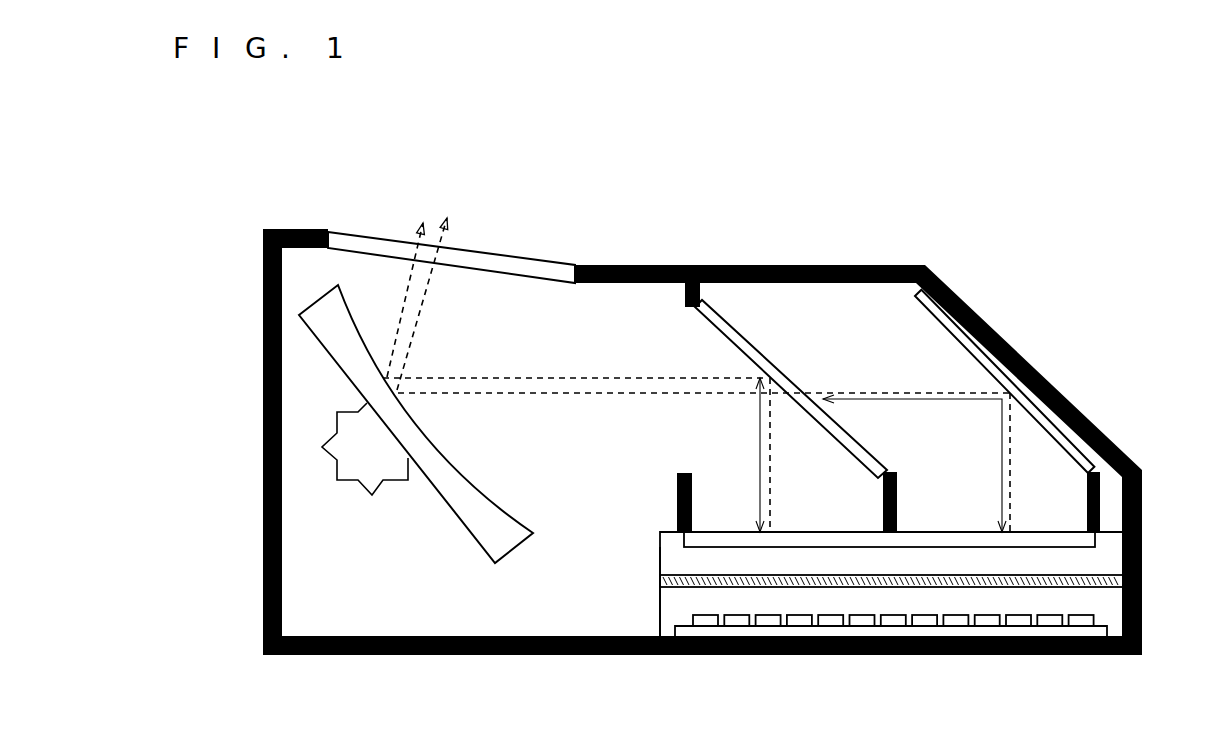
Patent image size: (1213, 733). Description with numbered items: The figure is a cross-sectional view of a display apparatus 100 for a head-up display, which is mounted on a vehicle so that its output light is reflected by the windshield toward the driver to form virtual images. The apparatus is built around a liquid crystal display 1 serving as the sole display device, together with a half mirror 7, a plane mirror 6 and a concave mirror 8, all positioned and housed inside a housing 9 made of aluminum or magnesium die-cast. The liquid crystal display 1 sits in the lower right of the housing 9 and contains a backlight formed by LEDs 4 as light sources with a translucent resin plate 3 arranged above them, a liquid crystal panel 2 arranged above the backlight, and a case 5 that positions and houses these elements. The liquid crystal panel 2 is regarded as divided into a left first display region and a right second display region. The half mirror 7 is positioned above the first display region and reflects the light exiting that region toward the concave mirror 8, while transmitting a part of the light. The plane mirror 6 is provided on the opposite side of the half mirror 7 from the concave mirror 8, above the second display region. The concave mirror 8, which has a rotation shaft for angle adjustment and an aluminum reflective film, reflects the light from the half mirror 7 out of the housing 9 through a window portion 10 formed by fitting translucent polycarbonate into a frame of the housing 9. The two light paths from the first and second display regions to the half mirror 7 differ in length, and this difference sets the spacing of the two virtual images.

The display apparatus 100 is at (231, 133).
The liquid crystal display 1 is at (670, 548).
The liquid crystal panel 2 is at (1095, 542).
The translucent resin plate 3 is at (1120, 581).
The LEDs 4 is at (1097, 617).
The case 5 is at (660, 604).
The plane mirror 6 is at (1007, 338).
The half mirror 7 is at (733, 333).
The concave mirror 8 is at (357, 307).
The housing 9 is at (263, 447).
The window portion 10 is at (508, 263).